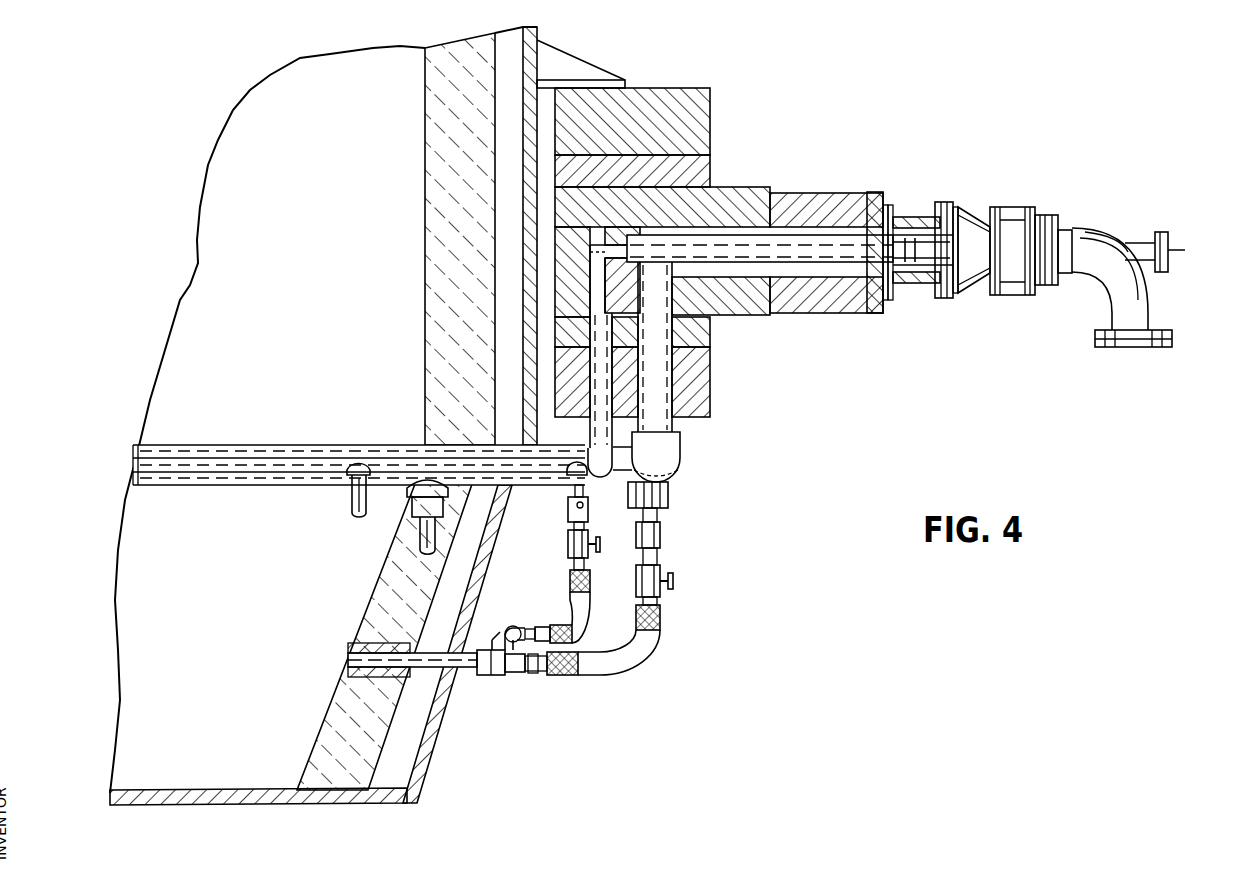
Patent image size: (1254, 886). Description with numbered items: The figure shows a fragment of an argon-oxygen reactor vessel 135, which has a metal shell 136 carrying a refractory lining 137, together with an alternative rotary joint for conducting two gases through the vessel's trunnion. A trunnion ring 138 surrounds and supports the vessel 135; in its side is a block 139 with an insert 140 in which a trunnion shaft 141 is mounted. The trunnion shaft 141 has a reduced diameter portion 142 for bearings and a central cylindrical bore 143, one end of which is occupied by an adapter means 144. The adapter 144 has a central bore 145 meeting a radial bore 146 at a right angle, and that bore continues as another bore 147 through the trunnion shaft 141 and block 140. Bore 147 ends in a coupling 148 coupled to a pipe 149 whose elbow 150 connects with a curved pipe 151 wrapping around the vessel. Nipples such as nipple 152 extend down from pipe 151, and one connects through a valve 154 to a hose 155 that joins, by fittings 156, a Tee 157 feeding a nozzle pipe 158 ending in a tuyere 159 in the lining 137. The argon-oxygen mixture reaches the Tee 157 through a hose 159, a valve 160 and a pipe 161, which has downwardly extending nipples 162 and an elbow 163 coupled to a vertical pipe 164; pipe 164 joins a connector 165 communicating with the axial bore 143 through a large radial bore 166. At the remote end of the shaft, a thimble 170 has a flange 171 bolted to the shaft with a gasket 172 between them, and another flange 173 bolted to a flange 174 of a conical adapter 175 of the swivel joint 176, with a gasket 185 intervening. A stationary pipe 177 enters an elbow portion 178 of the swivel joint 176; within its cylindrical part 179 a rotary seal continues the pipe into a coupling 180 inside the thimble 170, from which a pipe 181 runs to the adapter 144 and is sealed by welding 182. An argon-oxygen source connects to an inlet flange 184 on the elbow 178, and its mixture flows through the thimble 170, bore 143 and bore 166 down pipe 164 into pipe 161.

The argon-oxygen reactor vessel 135 is at (258, 606).
The metal shell 136 is at (440, 770).
The lining 137 is at (345, 712).
The trunnion ring 138 is at (803, 330).
The block 139 is at (678, 100).
The insert 140 is at (690, 155).
The trunnion shaft 141 is at (739, 184).
The reduced diameter portion 142 is at (785, 190).
The central cylindrical bore 143 is at (718, 234).
The adapter means 144 is at (578, 225).
The central bore 145 is at (600, 262).
The radial bore 146 is at (562, 258).
The bore 147 is at (620, 298).
The coupling 148 is at (600, 323).
The pipe 149 is at (600, 390).
The elbow 150 is at (604, 488).
The pipe 151 is at (528, 470).
The nipple 152 is at (350, 497).
The valve 154 is at (568, 540).
The hose 155 is at (578, 606).
The fittings 156 is at (505, 624).
The Tee 157 is at (492, 676).
The nozzle pipe 158 is at (470, 668).
The tuyere 159 is at (660, 640).
The valve 160 is at (665, 592).
The pipe 161 is at (615, 445).
The nipples 162 is at (660, 515).
The elbow 163 is at (680, 455).
The vertical pipe 164 is at (663, 358).
The connector 165 is at (675, 318).
The large radial bore 166 is at (672, 290).
The thimble 170 is at (911, 200).
The flange 171 is at (886, 205).
The gasket 172 is at (870, 210).
The flange 173 is at (940, 210).
The flange 174 is at (962, 220).
The adapter 175 is at (975, 225).
The swivel joint 176 is at (1154, 248).
The pipe 177 is at (1172, 252).
The elbow portion 178 is at (1100, 240).
The cylindrical part 179 is at (1025, 210).
The coupling 180 is at (915, 265).
The pipe 181 is at (865, 312).
The welding 182 is at (648, 240).
The inlet flange 184 is at (1150, 330).
The gasket 185 is at (955, 215).